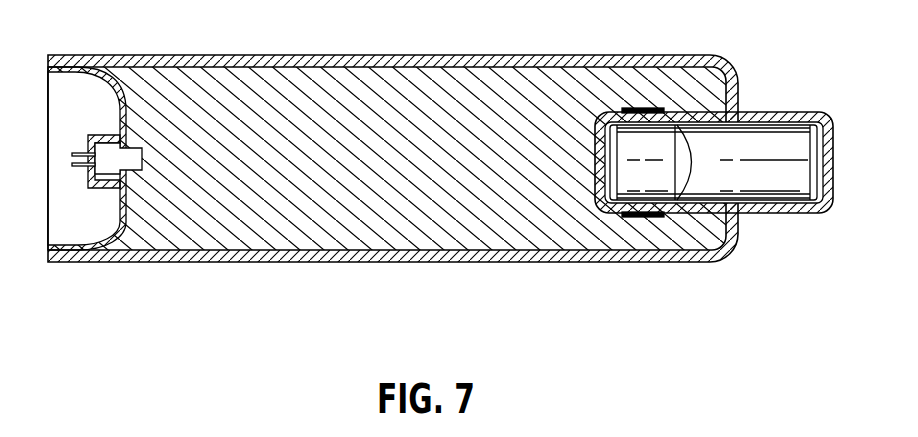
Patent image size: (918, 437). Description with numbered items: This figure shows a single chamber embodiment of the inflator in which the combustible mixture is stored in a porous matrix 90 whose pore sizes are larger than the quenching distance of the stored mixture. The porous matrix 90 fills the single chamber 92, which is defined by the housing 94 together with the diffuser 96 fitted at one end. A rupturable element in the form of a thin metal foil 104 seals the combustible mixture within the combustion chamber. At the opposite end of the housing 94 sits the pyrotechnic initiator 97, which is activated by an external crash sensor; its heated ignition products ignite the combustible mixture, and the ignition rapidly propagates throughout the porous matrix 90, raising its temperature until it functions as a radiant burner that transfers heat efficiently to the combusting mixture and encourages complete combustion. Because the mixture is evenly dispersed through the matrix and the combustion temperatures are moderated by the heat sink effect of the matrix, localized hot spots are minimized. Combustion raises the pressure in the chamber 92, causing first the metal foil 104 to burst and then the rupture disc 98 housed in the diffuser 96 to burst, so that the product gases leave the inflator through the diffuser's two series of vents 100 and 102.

The porous matrix 90 is at (438, 188).
The single chamber 92 is at (274, 185).
The housing 94 is at (537, 264).
The diffuser 96 is at (817, 113).
The pyrotechnic initiator 97 is at (137, 158).
The rupture disc 98 is at (703, 176).
The first series of vents 100 is at (643, 217).
The second series of vents 102 is at (773, 207).
The thin metal foil 104 is at (645, 112).